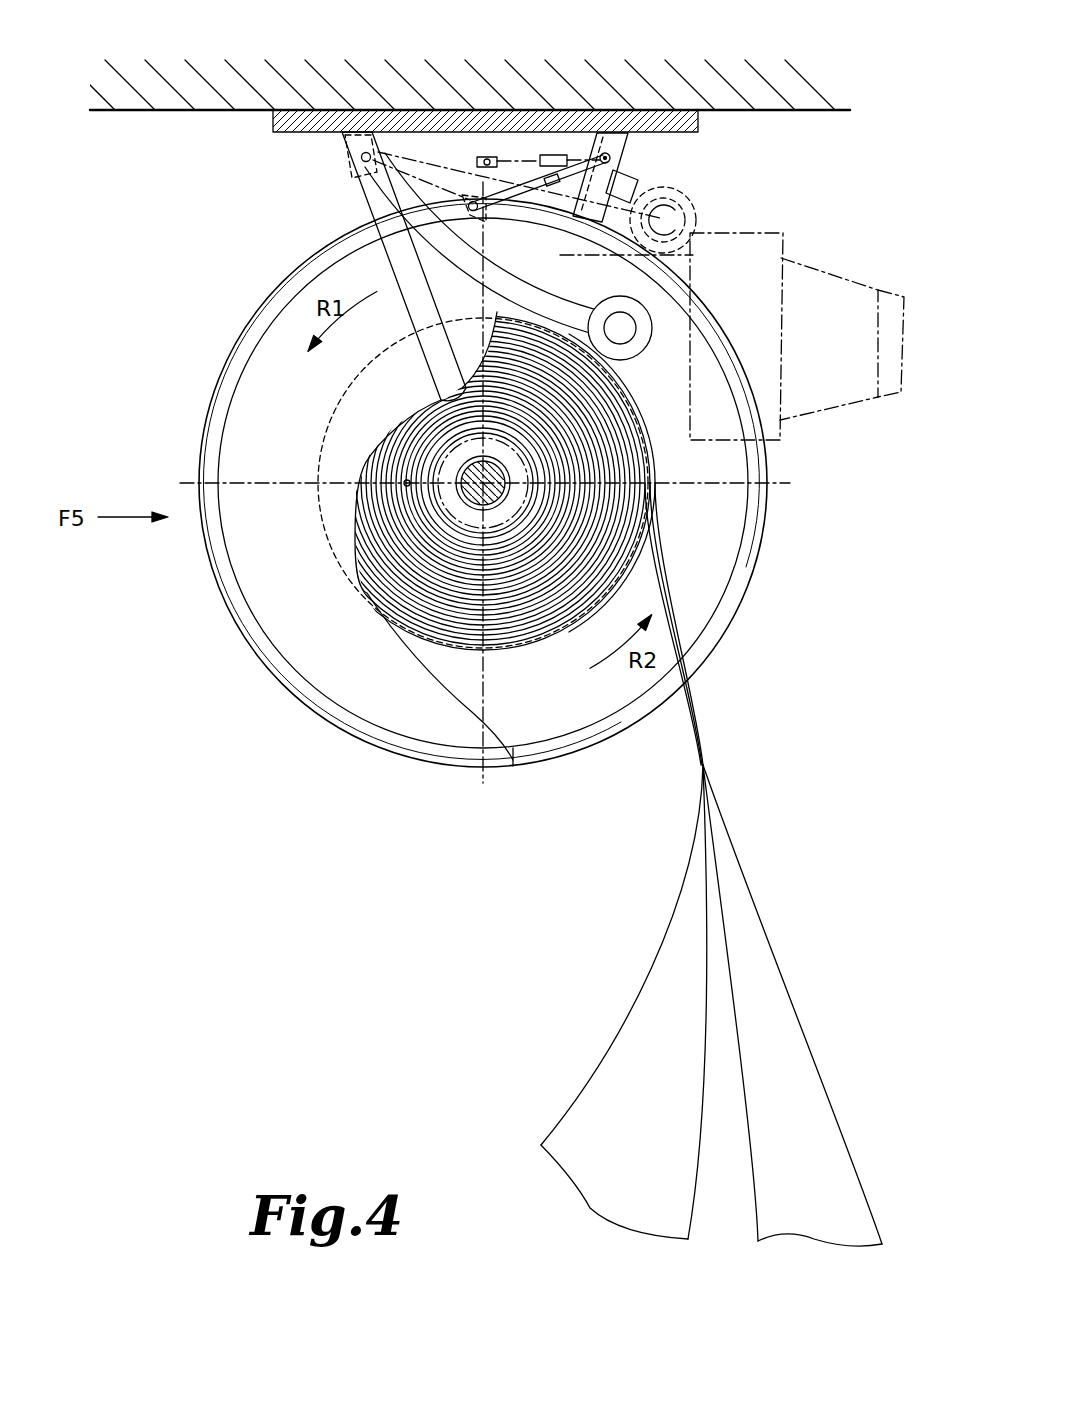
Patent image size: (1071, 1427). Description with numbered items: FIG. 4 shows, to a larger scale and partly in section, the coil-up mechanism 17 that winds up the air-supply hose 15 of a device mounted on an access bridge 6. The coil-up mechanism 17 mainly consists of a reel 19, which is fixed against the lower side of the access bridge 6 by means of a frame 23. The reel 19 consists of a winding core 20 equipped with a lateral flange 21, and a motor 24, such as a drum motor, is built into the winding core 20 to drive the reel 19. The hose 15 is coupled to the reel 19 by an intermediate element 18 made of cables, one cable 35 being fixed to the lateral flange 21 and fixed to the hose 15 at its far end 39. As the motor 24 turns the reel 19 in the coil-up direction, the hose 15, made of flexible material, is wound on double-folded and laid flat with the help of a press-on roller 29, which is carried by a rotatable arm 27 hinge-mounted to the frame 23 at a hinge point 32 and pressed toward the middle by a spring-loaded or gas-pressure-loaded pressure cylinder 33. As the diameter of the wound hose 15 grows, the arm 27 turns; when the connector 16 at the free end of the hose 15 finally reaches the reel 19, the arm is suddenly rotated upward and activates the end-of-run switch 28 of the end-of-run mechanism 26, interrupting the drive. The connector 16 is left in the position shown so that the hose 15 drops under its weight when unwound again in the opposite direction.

The access bridge 6 is at (777, 72).
The hose 15 is at (670, 979).
The connector 16 is at (827, 288).
The coil-up mechanism 17 is at (285, 802).
The intermediate element 18 is at (470, 563).
The reel 19 is at (320, 653).
The winding core 20 is at (406, 478).
The lateral flange 21 is at (260, 583).
The frame 23 is at (368, 213).
The motor 24 is at (508, 520).
The end-of-run mechanism 26 is at (705, 187).
The rotatable arm 27 is at (565, 295).
The end-of-run switch 28 is at (632, 178).
The press-on roller 29 is at (640, 327).
The hinge point 32 is at (357, 157).
The pressure cylinder 33 is at (565, 165).
The cable 35 is at (544, 530).
The far end of cable 39 is at (355, 506).